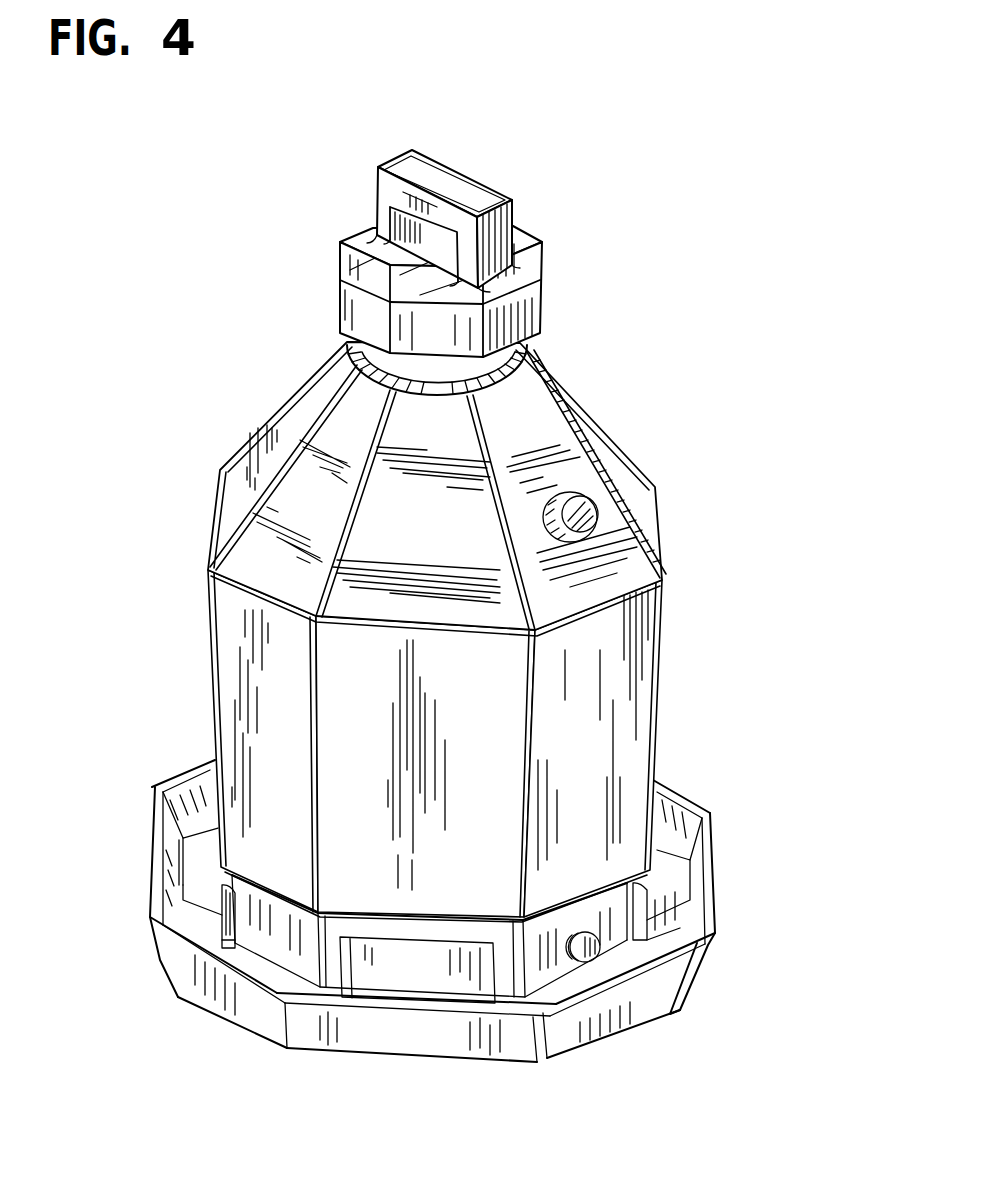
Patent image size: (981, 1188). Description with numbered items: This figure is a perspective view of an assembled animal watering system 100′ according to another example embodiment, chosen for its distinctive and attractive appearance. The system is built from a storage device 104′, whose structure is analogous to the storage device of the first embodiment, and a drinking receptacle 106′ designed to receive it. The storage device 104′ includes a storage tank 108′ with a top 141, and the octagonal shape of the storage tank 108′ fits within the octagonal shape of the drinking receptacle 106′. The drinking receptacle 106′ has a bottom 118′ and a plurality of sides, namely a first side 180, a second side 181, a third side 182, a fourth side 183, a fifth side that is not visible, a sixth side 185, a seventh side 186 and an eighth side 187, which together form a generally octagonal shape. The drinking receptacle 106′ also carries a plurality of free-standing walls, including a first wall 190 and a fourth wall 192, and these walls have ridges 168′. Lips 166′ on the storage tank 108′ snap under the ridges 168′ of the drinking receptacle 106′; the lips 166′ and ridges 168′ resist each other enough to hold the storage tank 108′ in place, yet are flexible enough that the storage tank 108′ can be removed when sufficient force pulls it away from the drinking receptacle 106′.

The animal watering system 100′ is at (660, 197).
The storage device 104′ is at (534, 632).
The storage tank 108′ is at (765, 585).
The fourth side 183 is at (174, 776).
The sixth side 185 is at (653, 784).
The bottom 118′ is at (680, 897).
The third side 182 is at (152, 857).
The fourth wall 192 is at (647, 923).
The drinking receptacle 106′ is at (713, 933).
The ridges 168′ is at (222, 897).
The seventh side 186 is at (713, 937).
The top 141 is at (222, 932).
The second side 181 is at (212, 990).
The first wall 190 is at (418, 990).
The lips 166′ is at (232, 910).
The first side 180 is at (408, 1037).
The eighth side 187 is at (610, 987).